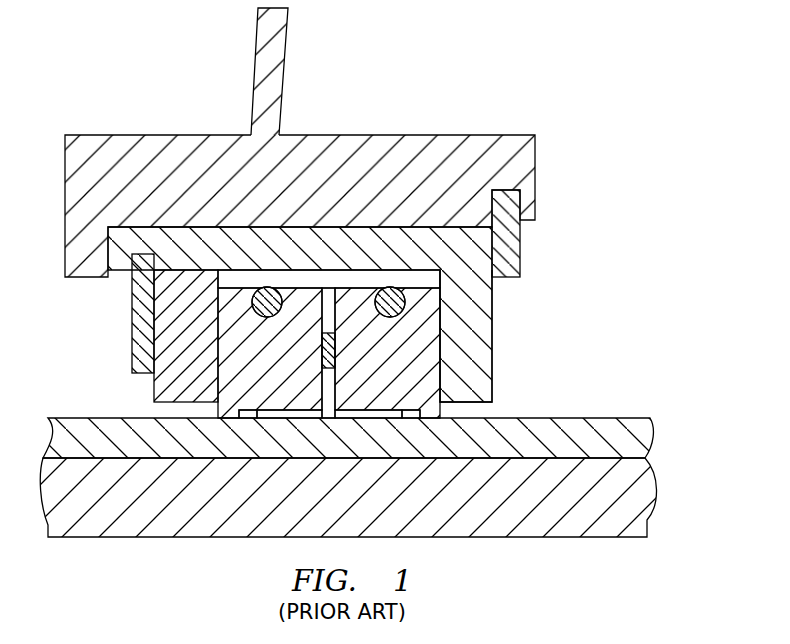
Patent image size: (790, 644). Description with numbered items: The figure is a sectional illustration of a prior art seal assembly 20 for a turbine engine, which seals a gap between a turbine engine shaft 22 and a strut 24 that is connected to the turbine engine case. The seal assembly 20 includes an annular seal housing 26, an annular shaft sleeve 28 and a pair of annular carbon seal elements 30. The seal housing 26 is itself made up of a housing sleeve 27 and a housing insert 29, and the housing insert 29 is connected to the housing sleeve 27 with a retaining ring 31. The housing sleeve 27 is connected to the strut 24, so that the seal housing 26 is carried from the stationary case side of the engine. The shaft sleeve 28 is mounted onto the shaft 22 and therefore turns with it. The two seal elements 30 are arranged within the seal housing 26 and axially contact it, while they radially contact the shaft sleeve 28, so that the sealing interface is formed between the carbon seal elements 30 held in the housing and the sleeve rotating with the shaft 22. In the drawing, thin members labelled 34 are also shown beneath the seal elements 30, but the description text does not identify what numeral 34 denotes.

The seal assembly 20 is at (533, 64).
The turbine engine shaft 22 is at (640, 493).
The strut 24 is at (290, 40).
The annular seal housing 26 is at (372, 226).
The housing sleeve 27 is at (485, 299).
The annular shaft sleeve 28 is at (638, 435).
The housing insert 29 is at (168, 347).
The annular carbon seal elements 30 is at (232, 378).
The retaining ring 31 is at (128, 307).
The shims 34 is at (442, 410).